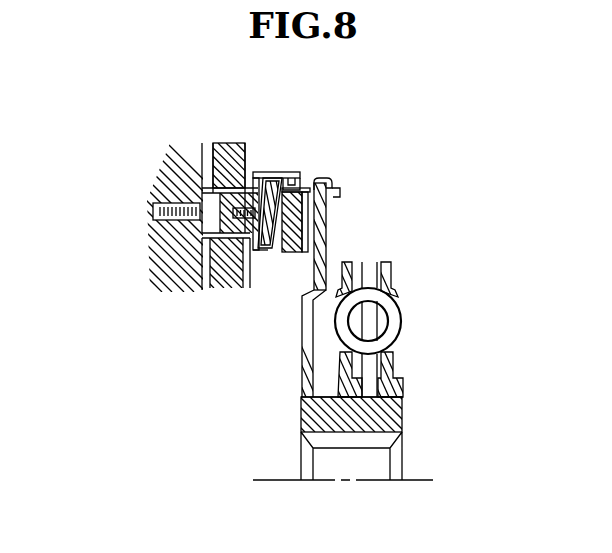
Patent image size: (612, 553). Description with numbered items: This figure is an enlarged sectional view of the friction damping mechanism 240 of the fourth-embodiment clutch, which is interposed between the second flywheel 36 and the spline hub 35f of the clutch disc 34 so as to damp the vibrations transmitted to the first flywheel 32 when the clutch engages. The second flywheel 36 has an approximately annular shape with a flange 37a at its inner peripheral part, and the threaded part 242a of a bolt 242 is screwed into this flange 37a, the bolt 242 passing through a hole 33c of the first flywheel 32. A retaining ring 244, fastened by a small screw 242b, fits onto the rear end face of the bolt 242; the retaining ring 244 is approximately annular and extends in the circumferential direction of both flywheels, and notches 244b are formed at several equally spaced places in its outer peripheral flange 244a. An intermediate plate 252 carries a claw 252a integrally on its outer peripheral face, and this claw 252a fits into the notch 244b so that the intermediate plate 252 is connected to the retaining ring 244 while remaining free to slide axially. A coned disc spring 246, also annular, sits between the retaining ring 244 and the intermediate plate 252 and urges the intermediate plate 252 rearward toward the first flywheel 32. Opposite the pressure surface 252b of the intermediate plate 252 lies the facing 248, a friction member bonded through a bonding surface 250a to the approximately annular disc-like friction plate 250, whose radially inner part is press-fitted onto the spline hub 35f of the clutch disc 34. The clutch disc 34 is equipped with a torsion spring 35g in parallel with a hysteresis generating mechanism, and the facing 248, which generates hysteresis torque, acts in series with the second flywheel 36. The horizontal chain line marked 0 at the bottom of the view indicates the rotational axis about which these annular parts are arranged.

The second flywheel 36 is at (85, 124).
The flange 37a is at (190, 176).
The bolt 242 is at (198, 152).
The threaded part 242a is at (166, 205).
The small screw 242b is at (262, 248).
The retaining ring 244 is at (182, 252).
The first flywheel 32 is at (234, 158).
The hole 33c is at (242, 165).
The outer peripheral flange 244a is at (278, 172).
The claw 252a is at (301, 172).
The friction damping mechanism 240 is at (322, 153).
The notch 244b is at (318, 179).
The pressure surface 252b is at (336, 197).
The facing 248 is at (305, 216).
The bonding surface 250a is at (322, 232).
The friction plate 250 is at (303, 337).
The intermediate plate 252 is at (288, 250).
The coned disc spring 246 is at (266, 252).
The clutch disc 34 is at (420, 314).
The torsion spring 35g is at (392, 330).
The spline hub 35f is at (320, 414).
The centerline 0 is at (352, 481).